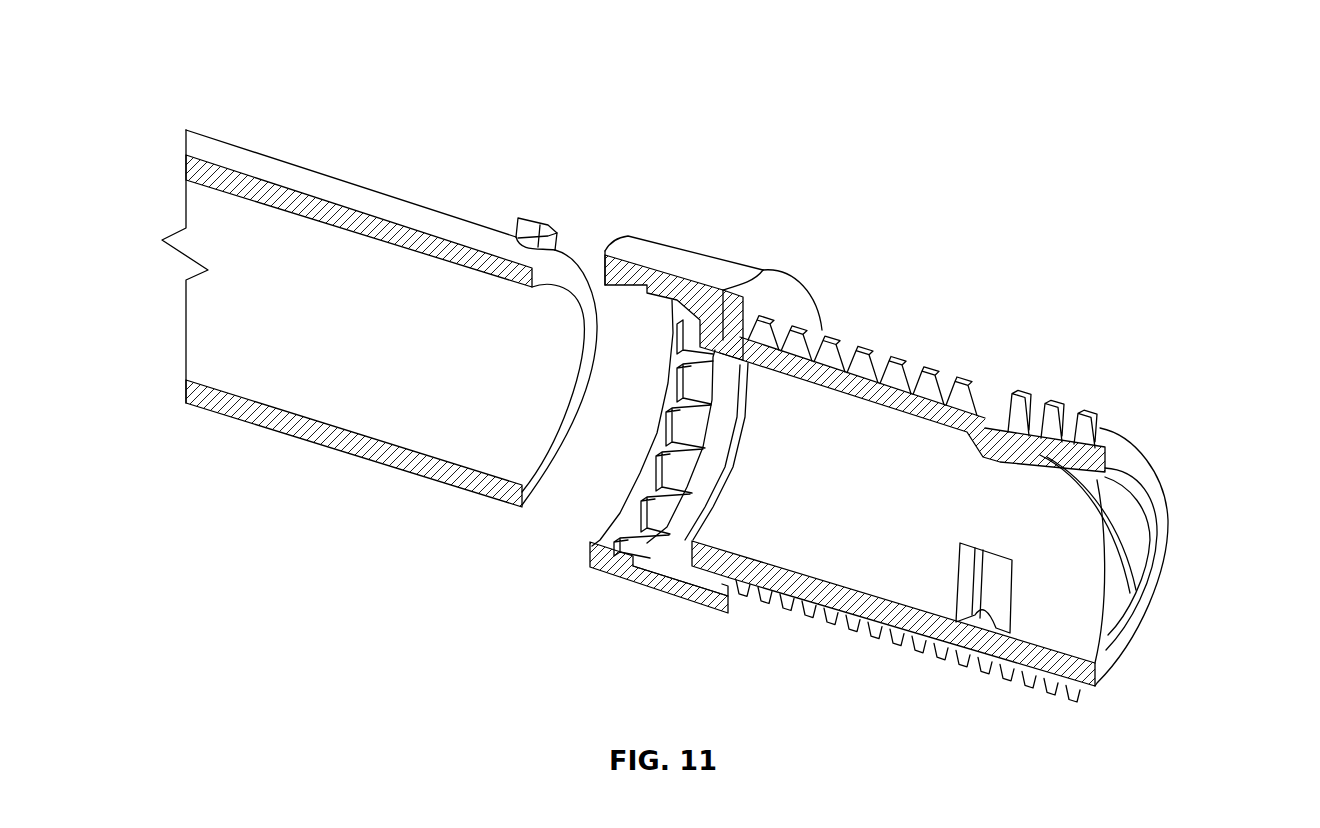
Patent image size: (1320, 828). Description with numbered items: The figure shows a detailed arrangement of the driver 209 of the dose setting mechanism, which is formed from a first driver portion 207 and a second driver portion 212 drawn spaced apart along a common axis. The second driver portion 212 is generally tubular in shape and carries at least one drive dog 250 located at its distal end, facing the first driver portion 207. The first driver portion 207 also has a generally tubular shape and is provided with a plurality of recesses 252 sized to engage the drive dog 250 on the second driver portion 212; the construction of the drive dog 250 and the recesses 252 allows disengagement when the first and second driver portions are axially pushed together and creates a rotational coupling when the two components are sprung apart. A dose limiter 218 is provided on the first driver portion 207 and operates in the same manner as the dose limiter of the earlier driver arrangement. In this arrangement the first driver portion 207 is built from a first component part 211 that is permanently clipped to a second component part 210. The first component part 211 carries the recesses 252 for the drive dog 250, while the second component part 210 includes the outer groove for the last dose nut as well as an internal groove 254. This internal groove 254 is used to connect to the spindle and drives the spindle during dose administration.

The first driver portion 207 is at (1057, 152).
The driver 209 is at (567, 62).
The second component part 210 is at (1173, 472).
The first component part 211 is at (738, 256).
The second driver portion 212 is at (359, 184).
The dose limiter 218 is at (903, 350).
The drive dog 250 is at (541, 223).
The recesses 252 is at (611, 582).
The internal groove 254 is at (1012, 602).